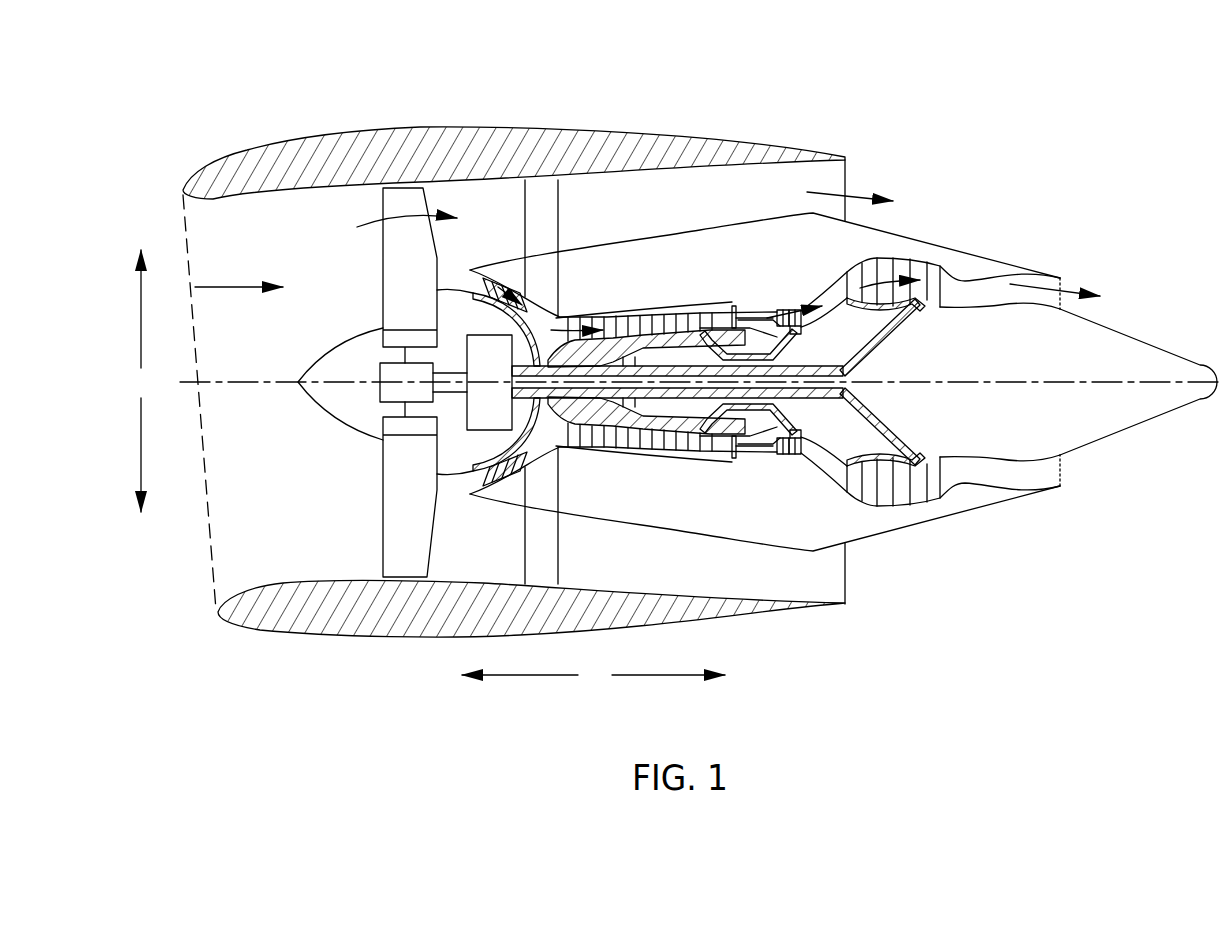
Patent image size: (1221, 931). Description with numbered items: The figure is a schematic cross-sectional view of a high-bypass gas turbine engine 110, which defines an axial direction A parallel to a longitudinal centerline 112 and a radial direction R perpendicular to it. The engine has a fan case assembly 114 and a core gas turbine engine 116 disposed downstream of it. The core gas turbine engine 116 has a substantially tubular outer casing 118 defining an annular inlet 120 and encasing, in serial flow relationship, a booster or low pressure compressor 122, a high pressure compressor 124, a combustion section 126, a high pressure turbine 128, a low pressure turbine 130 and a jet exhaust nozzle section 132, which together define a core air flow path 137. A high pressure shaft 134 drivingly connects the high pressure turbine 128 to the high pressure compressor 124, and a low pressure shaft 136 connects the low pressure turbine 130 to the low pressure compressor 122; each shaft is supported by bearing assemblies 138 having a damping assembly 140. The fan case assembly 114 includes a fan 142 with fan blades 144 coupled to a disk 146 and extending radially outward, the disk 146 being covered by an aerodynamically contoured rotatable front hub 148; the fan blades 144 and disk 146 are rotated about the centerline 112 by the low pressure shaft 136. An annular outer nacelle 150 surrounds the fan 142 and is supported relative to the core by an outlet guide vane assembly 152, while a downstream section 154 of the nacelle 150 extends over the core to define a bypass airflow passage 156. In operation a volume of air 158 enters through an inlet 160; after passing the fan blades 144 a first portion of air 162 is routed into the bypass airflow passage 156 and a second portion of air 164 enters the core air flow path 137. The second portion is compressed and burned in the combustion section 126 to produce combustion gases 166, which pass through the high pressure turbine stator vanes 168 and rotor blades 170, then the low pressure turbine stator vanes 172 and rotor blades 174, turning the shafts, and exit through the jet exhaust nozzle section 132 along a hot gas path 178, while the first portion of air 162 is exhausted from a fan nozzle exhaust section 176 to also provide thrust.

The gas turbine engine 110 is at (1007, 160).
The longitudinal centerline 112 is at (1043, 380).
The fan case assembly 114 is at (489, 338).
The core gas turbine engine 116 is at (827, 389).
The outer casing 118 is at (642, 525).
The annular inlet 120 is at (475, 480).
The low pressure compressor 122 is at (515, 490).
The high pressure compressor 124 is at (596, 433).
The combustion section 126 is at (753, 450).
The high pressure turbine 128 is at (866, 404).
The low pressure turbine 130 is at (875, 413).
The jet exhaust nozzle section 132 is at (980, 483).
The high pressure shaft 134 is at (735, 325).
The low pressure shaft 136 is at (800, 366).
The core air flow path 137 is at (551, 444).
The bearing assemblies 138 is at (489, 382).
The damping assembly 140 is at (648, 345).
The fan 142 is at (350, 432).
The fan blades 144 is at (380, 523).
The disk 146 is at (397, 338).
The front hub 148 is at (320, 402).
The outer nacelle 150 is at (560, 397).
The outlet guide vane assembly 152 is at (562, 222).
The downstream section 154 is at (852, 353).
The bypass airflow passage 156 is at (627, 214).
The volume of air 158 is at (220, 285).
The inlet 160 is at (212, 545).
The first portion of air 162 is at (863, 195).
The second portion of air 164 is at (458, 277).
The combustion gases 166 is at (785, 306).
The HP turbine stator vanes 168 is at (774, 448).
The HP turbine rotor blades 170 is at (790, 436).
The LP turbine stator vanes 172 is at (853, 490).
The LP turbine rotor blades 174 is at (872, 492).
The fan nozzle exhaust section 176 is at (827, 170).
The hot gas path 178 is at (835, 277).